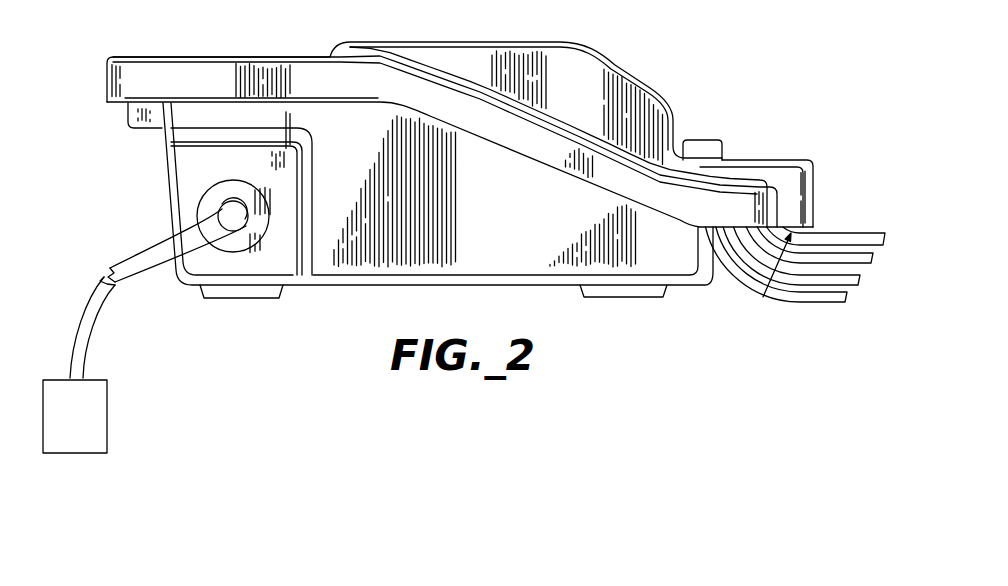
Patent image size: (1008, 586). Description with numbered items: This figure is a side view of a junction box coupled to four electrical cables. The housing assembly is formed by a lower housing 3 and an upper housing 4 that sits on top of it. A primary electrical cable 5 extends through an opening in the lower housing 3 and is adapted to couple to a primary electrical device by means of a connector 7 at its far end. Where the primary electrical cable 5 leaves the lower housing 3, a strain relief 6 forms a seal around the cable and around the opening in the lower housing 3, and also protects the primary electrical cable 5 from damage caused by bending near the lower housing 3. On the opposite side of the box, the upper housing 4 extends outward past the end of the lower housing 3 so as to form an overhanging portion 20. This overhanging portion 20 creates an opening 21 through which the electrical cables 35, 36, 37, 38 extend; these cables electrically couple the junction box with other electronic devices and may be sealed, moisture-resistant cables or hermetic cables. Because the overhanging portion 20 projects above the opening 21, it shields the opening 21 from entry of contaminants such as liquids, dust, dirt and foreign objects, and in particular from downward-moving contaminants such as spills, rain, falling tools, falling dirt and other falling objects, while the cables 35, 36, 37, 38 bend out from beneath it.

The lower housing 3 is at (475, 267).
The upper housing 4 is at (276, 57).
The primary electrical cable 5 is at (80, 340).
The strain relief 6 is at (207, 200).
The connector 7 is at (97, 440).
The overhanging portion 20 is at (770, 155).
The opening 21 is at (763, 296).
The electrical cable 35 is at (808, 303).
The electrical cable 36 is at (853, 288).
The electrical cable 37 is at (863, 268).
The electrical cable 38 is at (850, 234).